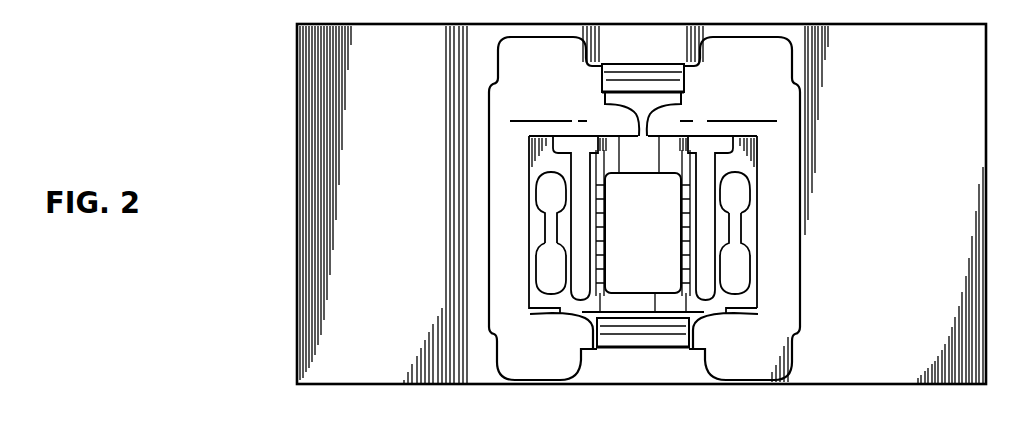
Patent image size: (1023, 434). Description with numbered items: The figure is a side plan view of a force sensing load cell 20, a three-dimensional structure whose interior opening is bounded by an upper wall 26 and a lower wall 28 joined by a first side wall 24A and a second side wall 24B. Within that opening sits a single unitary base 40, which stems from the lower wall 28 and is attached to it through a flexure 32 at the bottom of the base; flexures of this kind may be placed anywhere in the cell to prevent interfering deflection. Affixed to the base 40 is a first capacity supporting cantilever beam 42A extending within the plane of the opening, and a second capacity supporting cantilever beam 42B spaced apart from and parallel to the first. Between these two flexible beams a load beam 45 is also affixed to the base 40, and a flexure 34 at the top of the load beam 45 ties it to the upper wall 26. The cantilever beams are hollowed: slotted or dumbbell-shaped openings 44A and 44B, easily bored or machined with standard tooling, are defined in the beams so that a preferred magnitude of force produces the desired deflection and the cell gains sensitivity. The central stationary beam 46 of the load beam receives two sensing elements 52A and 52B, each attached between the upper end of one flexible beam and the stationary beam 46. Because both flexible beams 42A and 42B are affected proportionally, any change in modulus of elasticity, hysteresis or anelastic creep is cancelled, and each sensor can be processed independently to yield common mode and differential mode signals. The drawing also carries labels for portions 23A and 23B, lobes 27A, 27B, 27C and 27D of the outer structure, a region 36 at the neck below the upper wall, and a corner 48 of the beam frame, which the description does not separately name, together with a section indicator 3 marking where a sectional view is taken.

The force sensing load cell 20 is at (205, 36).
The section line 3- 3 is at (536, 117).
The left frame portion 23A is at (415, 229).
The right frame portion 23B is at (925, 211).
The first side wall 24A is at (497, 190).
The second side wall 24B is at (796, 236).
The upper wall 26 is at (647, 24).
The upper left lobe 27A is at (504, 25).
The upper right lobe 27B is at (750, 30).
The lower left lobe 27C is at (542, 386).
The lower right lobe 27D is at (745, 387).
The lower wall 28 is at (660, 387).
The flexure 32 is at (657, 334).
The flexure 34 is at (621, 80).
The neck portion 36 is at (645, 122).
The base 40 is at (750, 302).
The first capacity supporting cantilever beam 42A is at (752, 240).
The second capacity supporting cantilever beam 42B is at (538, 233).
The opening 44A is at (740, 188).
The opening 44B is at (548, 270).
The load beam 45 is at (600, 266).
The stationary beam 46 is at (660, 275).
The crossbar 48 is at (760, 146).
The sensing element 52A is at (530, 135).
The sensing element 52B is at (758, 136).